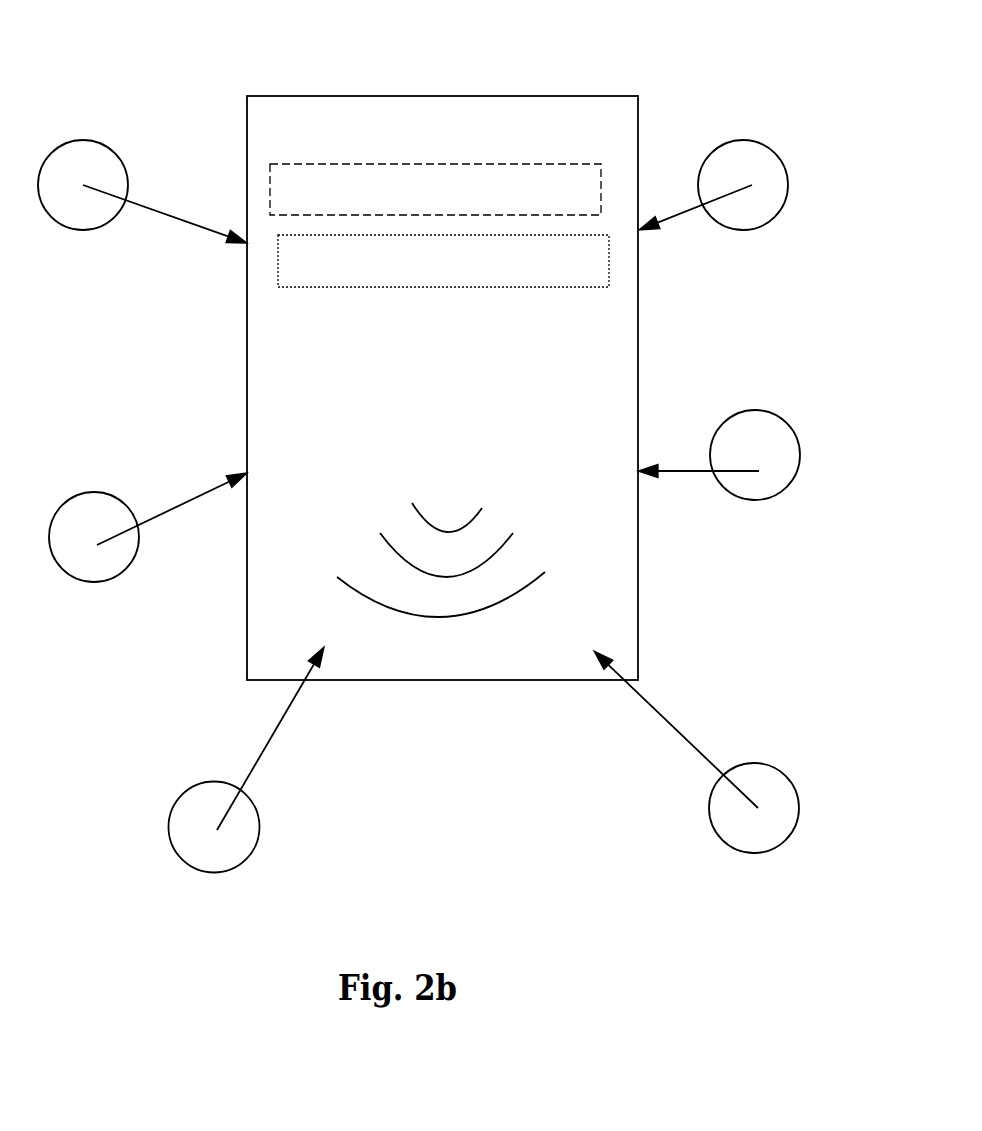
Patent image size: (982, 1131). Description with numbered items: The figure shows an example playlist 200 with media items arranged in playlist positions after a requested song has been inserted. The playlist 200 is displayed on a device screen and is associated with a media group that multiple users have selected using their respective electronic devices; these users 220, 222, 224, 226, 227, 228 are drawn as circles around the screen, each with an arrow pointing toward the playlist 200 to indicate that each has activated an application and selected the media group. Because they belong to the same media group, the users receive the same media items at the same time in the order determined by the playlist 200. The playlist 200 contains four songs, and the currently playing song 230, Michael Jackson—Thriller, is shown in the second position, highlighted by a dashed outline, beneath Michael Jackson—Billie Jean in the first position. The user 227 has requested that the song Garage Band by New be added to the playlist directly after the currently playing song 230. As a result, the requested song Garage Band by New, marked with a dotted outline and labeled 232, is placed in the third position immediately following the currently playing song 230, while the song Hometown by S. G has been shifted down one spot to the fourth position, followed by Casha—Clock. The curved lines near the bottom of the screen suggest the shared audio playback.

The playlist 200 is at (360, 110).
The user 220 is at (97, 140).
The user 222 is at (108, 493).
The user 224 is at (228, 782).
The touch gesture input (swipe from bottom right) 226 is at (770, 763).
The user 227 is at (768, 410).
The user 228 is at (757, 140).
The currently playing song 230 is at (270, 164).
The newly inserted playlist item (dotted highlight) 232 is at (278, 272).